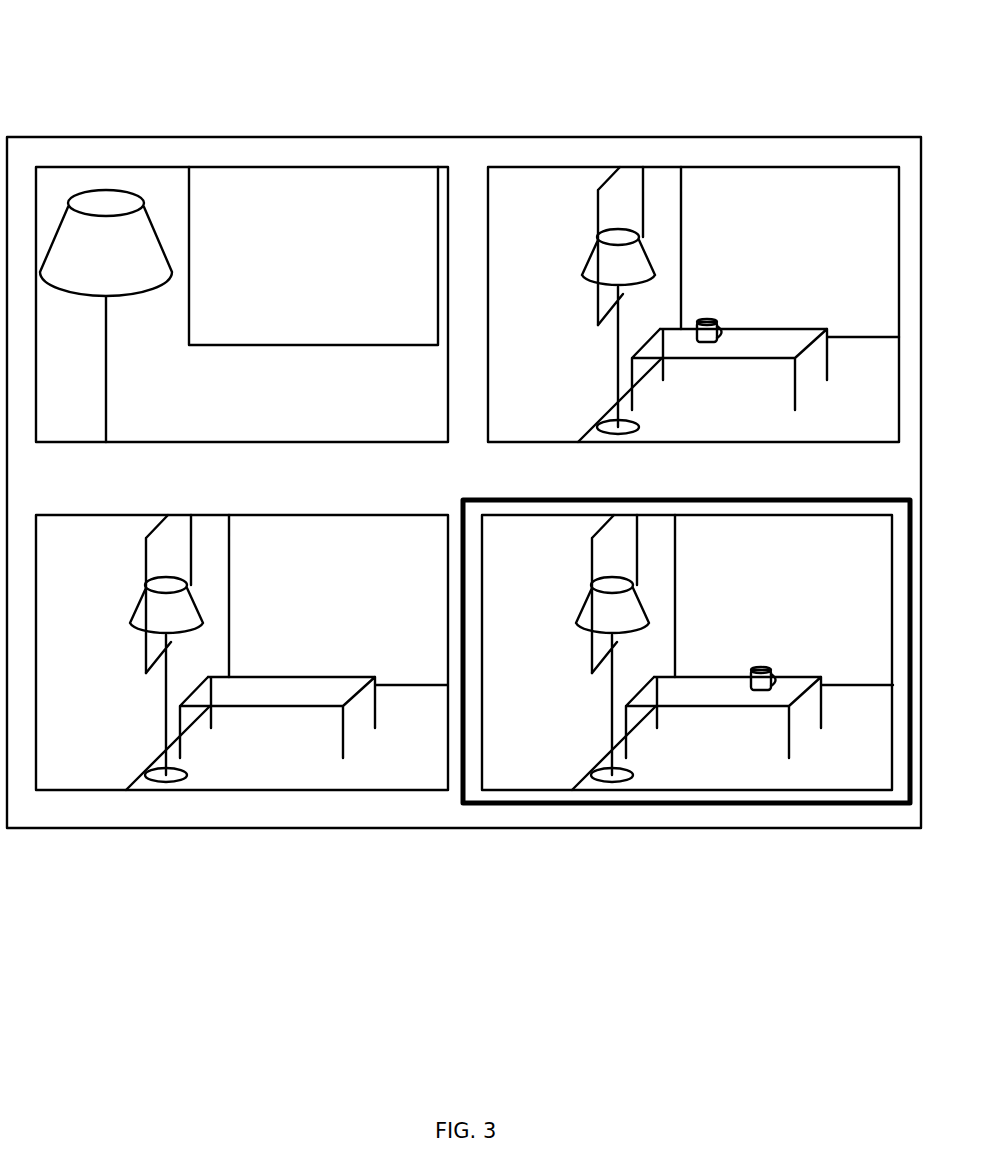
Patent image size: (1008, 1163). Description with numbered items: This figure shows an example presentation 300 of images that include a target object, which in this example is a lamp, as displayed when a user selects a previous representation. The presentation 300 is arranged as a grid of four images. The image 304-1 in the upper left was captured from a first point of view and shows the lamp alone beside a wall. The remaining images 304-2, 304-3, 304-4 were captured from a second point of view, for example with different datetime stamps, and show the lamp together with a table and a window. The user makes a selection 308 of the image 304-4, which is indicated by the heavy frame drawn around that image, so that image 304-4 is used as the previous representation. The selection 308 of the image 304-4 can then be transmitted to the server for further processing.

The presentation 300 is at (236, 70).
The image 304-1 is at (125, 167).
The image 304-2 is at (628, 167).
The image 304-3 is at (218, 790).
The image 304-4 is at (705, 790).
The selection 308 is at (517, 803).